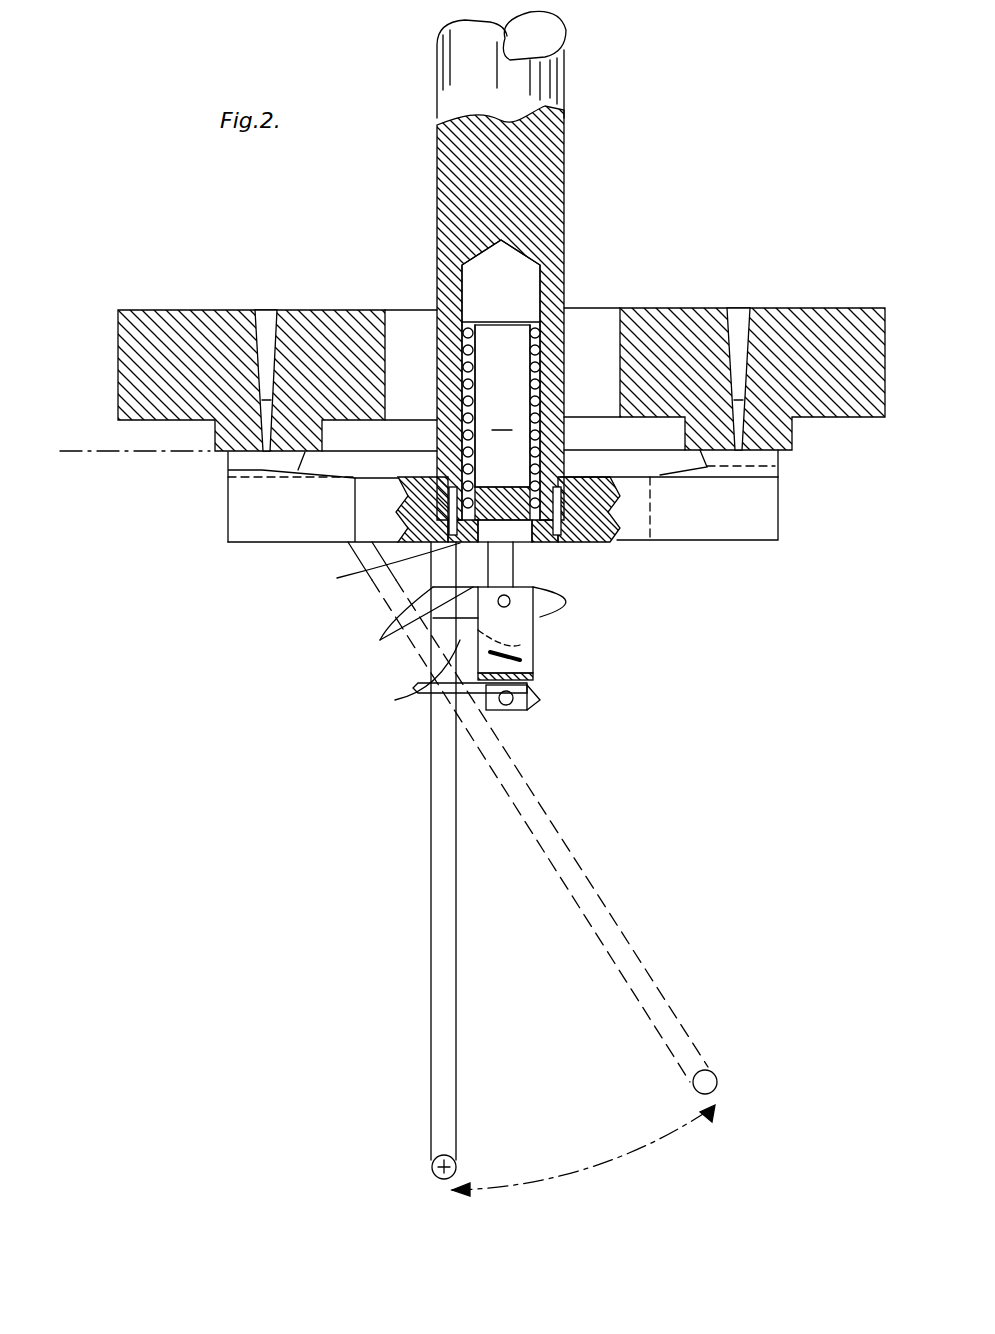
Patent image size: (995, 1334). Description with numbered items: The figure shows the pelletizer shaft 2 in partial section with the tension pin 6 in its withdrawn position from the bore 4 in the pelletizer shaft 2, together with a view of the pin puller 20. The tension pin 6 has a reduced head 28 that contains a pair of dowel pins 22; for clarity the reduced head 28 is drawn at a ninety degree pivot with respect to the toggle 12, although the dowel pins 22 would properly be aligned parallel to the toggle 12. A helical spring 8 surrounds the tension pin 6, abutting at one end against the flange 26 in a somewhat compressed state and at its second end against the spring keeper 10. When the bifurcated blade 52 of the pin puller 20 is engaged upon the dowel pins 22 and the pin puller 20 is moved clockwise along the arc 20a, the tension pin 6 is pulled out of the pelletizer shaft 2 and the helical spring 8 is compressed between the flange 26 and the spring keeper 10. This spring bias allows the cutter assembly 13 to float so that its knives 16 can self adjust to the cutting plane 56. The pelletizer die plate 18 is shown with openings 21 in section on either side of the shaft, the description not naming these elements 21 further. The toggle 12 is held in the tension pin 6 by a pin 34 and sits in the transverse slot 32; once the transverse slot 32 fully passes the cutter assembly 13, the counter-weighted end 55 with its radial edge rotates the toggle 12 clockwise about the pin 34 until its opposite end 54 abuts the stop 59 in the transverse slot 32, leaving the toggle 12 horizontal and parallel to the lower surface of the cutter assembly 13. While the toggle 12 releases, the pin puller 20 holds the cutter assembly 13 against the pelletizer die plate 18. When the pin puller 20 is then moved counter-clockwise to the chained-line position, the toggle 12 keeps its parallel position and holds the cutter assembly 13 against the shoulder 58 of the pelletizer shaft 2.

The pelletizer shaft 2 is at (528, 175).
The bore 4 is at (500, 282).
The flange 26 is at (515, 318).
The tension pin 6 is at (502, 422).
The helical spring 8 is at (465, 375).
The pelletizer die plate 18 is at (800, 335).
The slot 21 is at (265, 330).
The cutting plane 56 is at (145, 451).
The shoulder 58 is at (422, 478).
The spring keeper 10 is at (460, 545).
The knives 16 is at (265, 460).
The cutter assembly 13 is at (690, 512).
The pin 34 is at (510, 600).
The toggle 12 is at (540, 632).
The counter-weighted end 55 is at (567, 597).
The transverse slot 32 is at (535, 660).
The reduced head 28 is at (527, 690).
The dowel pins 22 is at (508, 708).
The bifurcated blade 52 is at (462, 718).
The end 54 is at (445, 598).
The stop 59 is at (430, 620).
The pin puller 20 is at (440, 958).
The arc 20a is at (585, 1178).